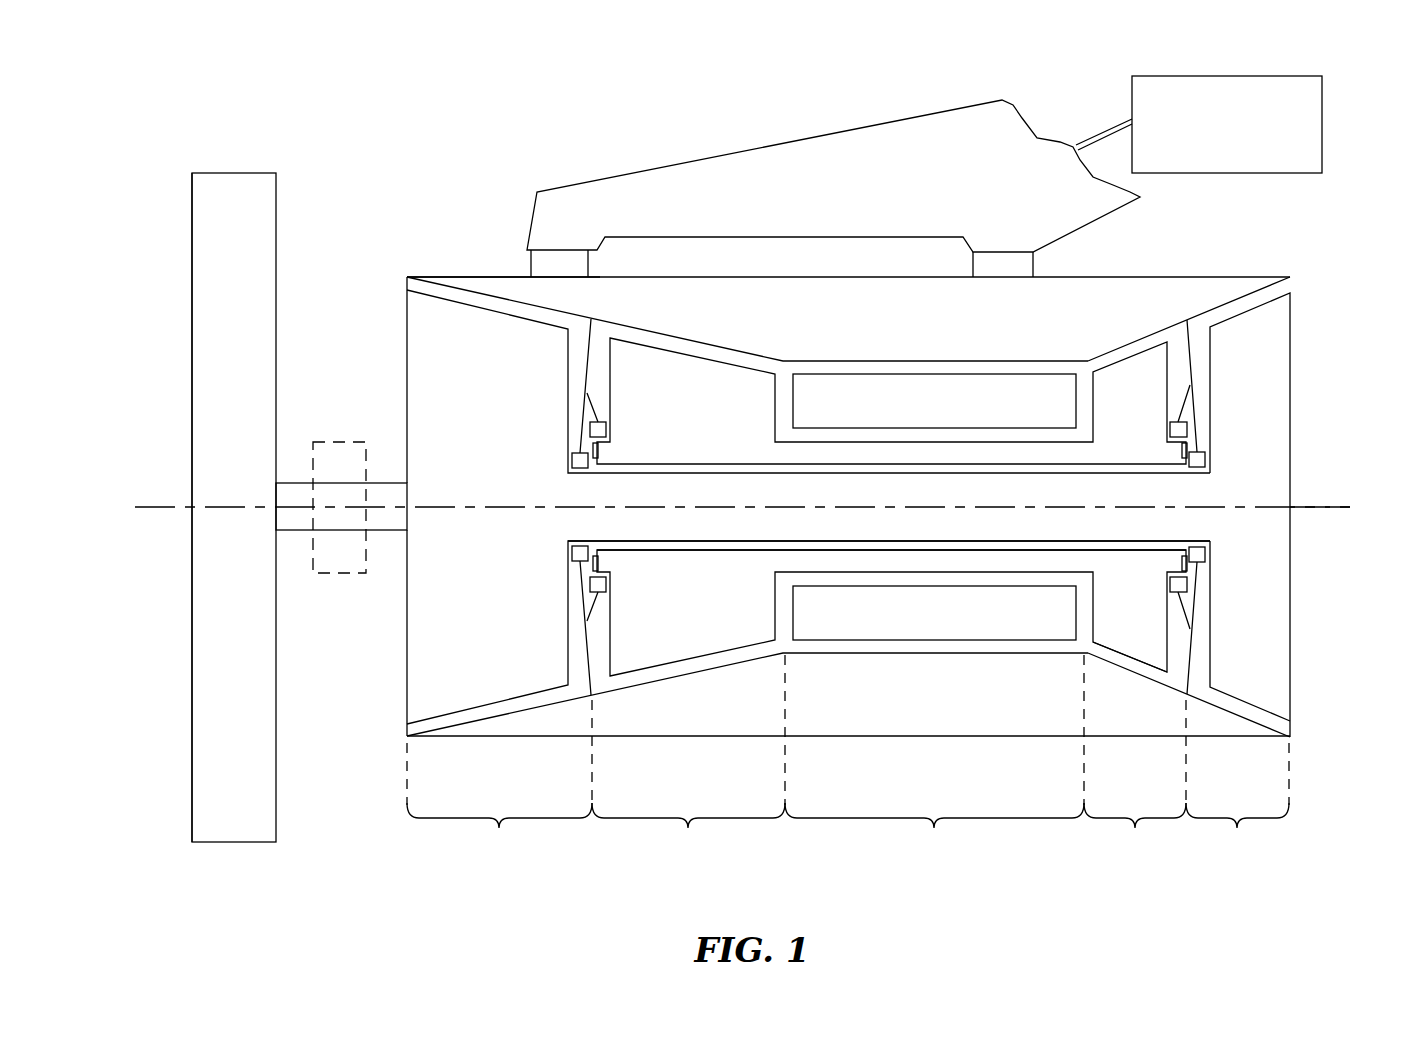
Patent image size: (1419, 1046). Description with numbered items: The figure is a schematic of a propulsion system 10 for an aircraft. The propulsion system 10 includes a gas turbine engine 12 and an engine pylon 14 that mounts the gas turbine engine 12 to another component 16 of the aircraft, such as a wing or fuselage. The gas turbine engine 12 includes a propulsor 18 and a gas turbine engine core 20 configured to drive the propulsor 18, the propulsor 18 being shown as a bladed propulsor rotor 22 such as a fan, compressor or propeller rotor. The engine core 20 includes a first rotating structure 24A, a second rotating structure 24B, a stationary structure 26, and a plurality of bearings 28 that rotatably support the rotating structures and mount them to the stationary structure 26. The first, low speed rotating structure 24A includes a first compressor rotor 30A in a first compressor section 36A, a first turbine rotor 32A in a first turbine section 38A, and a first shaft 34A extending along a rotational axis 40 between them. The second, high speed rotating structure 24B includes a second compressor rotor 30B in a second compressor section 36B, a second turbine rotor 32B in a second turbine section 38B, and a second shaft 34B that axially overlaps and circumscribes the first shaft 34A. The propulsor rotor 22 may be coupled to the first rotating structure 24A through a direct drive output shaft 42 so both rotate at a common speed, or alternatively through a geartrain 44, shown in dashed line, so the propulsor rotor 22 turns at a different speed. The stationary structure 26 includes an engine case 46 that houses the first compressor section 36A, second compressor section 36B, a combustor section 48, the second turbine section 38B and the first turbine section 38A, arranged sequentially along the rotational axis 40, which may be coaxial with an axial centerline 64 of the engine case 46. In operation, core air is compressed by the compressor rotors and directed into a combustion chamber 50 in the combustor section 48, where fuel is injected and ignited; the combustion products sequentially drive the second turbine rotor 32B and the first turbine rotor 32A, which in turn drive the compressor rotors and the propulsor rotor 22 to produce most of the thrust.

The propulsion system 10 is at (253, 112).
The gas turbine engine 12 is at (332, 114).
The engine pylon 14 is at (727, 151).
The component 16 is at (1216, 141).
The propulsor 18 is at (232, 872).
The gas turbine engine core 20 is at (391, 233).
The bladed propulsor rotor 22 is at (192, 768).
The first rotating structure 24A is at (379, 370).
The second rotating structure 24B is at (669, 347).
The stationary structure 26 is at (413, 274).
The bearings 28 is at (580, 468).
The first compressor rotor 30A is at (406, 680).
The second compressor rotor 30B is at (672, 666).
The first turbine rotor 32A is at (1291, 618).
The second turbine rotor 32B is at (1117, 654).
The first shaft 34A is at (706, 544).
The second shaft 34B is at (849, 544).
The first compressor section 36A is at (499, 781).
The second compressor section 36B is at (688, 759).
The first turbine section 38A is at (1237, 803).
The second turbine section 38B is at (1135, 782).
The rotational axis 40 is at (1350, 510).
The output shaft 42 is at (290, 531).
The geartrain 44 is at (340, 574).
The engine case 46 is at (486, 277).
The combustor section 48 is at (934, 759).
The combustion chamber 50 is at (962, 412).
The axial centerline 64 is at (1350, 512).